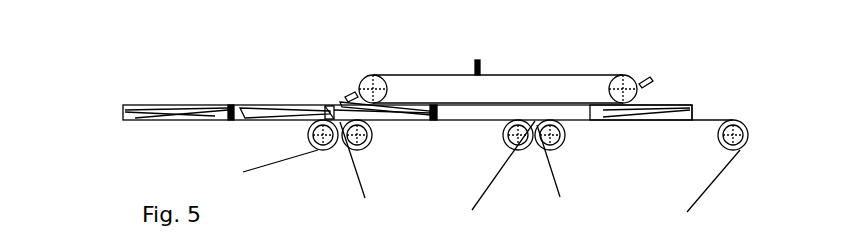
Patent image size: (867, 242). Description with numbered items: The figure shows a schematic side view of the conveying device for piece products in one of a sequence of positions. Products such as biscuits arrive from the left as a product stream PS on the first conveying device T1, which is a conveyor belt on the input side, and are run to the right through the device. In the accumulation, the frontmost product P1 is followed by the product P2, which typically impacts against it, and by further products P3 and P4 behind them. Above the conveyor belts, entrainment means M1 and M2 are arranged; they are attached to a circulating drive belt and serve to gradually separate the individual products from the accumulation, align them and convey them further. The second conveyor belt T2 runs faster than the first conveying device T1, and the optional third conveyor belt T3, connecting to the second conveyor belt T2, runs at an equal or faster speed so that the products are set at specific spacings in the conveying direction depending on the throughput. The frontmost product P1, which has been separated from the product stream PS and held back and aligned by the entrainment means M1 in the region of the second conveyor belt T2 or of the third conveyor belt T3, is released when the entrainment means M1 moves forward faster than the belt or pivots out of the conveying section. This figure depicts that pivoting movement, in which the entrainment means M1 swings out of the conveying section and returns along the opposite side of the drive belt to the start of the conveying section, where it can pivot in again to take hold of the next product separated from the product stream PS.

The product stream PS is at (118, 109).
The product P4 is at (178, 112).
The product P3 is at (278, 113).
The product P2 is at (345, 112).
The product P1 is at (650, 112).
The entrainment means M1 is at (642, 82).
The entrainment means M2 is at (438, 119).
The first conveying device T1 is at (293, 118).
The second conveyor belt T2 is at (390, 120).
The third conveyor belt T3 is at (707, 122).